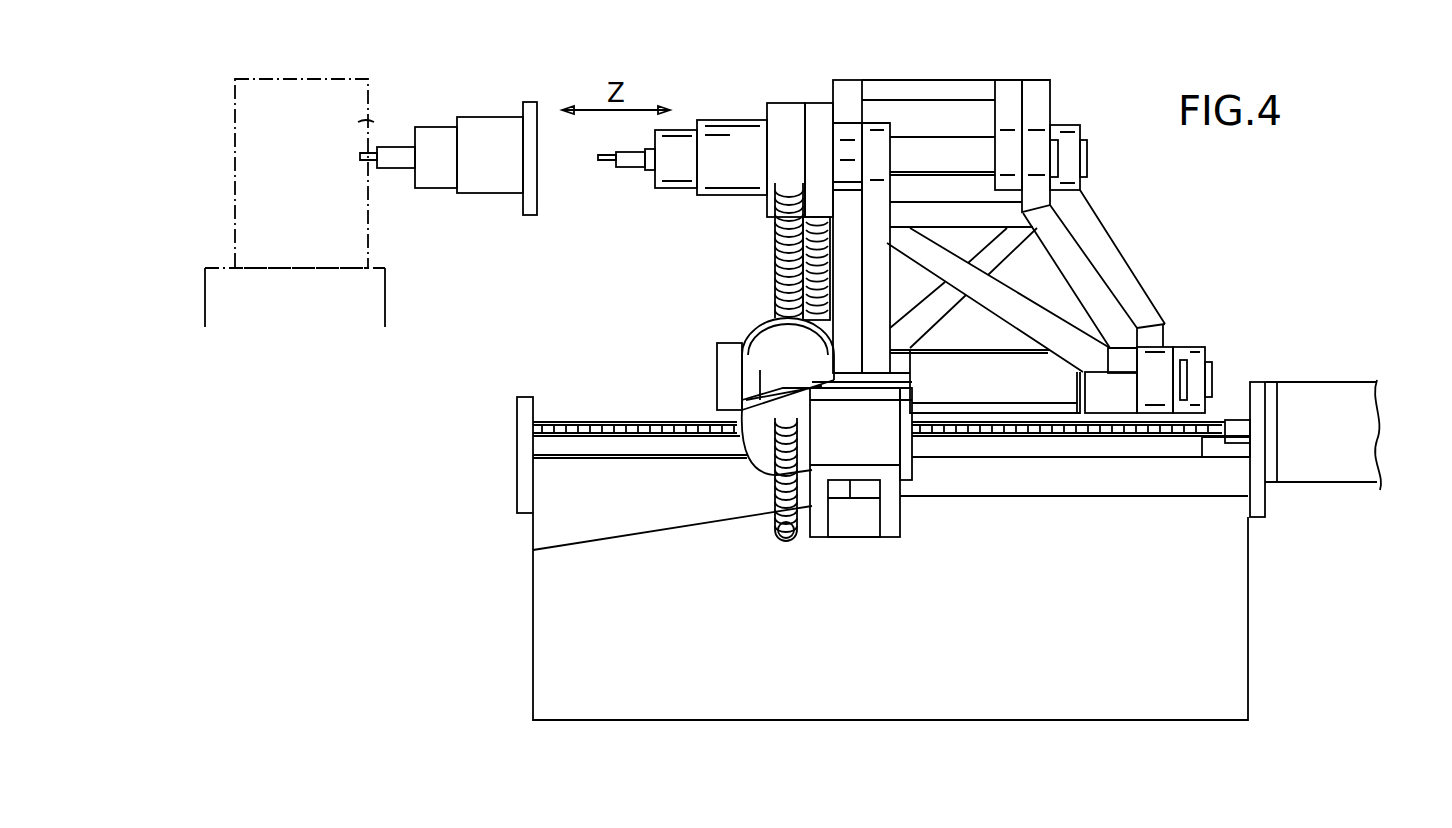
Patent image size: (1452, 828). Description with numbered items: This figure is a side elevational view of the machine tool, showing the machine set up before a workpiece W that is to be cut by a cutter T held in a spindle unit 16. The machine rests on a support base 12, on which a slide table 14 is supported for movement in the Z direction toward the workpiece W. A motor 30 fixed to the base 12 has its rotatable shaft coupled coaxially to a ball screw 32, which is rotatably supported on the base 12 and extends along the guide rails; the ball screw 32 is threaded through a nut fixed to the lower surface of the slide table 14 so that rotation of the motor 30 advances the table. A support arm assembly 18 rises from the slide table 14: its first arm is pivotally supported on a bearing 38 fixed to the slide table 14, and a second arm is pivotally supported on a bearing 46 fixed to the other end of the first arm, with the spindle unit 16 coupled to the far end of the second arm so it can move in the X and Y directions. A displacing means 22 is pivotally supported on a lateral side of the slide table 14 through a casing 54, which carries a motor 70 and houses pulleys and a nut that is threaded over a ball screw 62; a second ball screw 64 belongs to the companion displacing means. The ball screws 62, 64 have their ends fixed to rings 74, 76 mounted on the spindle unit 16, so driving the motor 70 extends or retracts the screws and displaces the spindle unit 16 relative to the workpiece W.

The support base 12 is at (1215, 577).
The slide table 14 is at (725, 378).
The spindle unit 16 is at (723, 180).
The support arm assembly 18 is at (1125, 244).
The displacing means 22 is at (757, 477).
The motor 30 is at (1323, 405).
The ball screw 32 is at (1012, 437).
The bearing 38 is at (1167, 347).
The bearing 46 is at (1035, 155).
The casing 54 is at (770, 345).
The ball screw 62 is at (777, 290).
The ball screw 64 is at (812, 245).
The motor 70 is at (860, 450).
The ring 74 is at (780, 115).
The ring 76 is at (820, 114).
The cutter T is at (633, 163).
The workpiece W is at (383, 121).